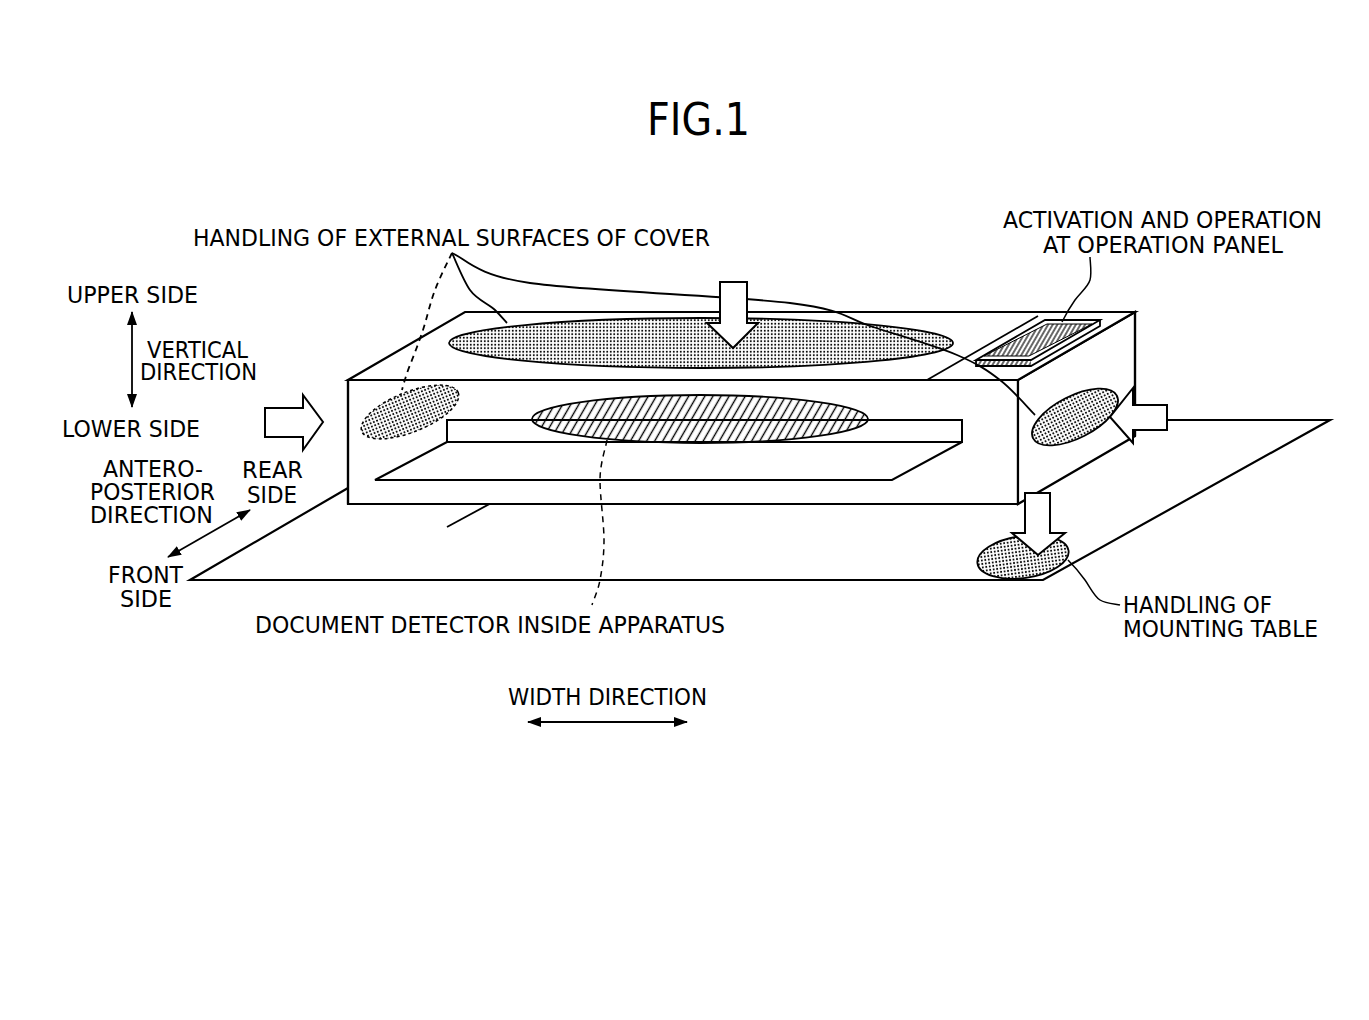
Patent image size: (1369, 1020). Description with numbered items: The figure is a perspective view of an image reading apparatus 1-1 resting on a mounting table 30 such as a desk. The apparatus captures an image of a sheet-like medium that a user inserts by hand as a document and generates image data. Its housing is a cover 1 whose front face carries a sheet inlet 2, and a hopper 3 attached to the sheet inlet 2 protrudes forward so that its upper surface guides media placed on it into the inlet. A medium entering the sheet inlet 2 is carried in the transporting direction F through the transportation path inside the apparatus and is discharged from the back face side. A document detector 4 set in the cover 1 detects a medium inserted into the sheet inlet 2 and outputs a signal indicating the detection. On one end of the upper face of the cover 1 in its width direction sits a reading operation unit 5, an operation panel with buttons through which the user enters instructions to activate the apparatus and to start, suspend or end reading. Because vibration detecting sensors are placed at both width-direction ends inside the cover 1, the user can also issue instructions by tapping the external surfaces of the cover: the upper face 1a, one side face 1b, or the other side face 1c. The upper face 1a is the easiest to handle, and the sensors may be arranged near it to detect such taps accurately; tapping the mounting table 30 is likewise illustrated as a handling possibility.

The image reading apparatus 1-1 is at (742, 410).
The cover 1 is at (903, 313).
The upper face of the cover 1a is at (957, 322).
The one side face of the cover 1b is at (335, 388).
The other side face of the cover 1c is at (1123, 352).
The sheet inlet 2 is at (928, 440).
The hopper 3 is at (855, 483).
The document detector 4 is at (773, 443).
The reading operation unit 5 is at (1105, 320).
The mounting table 30 is at (1247, 402).